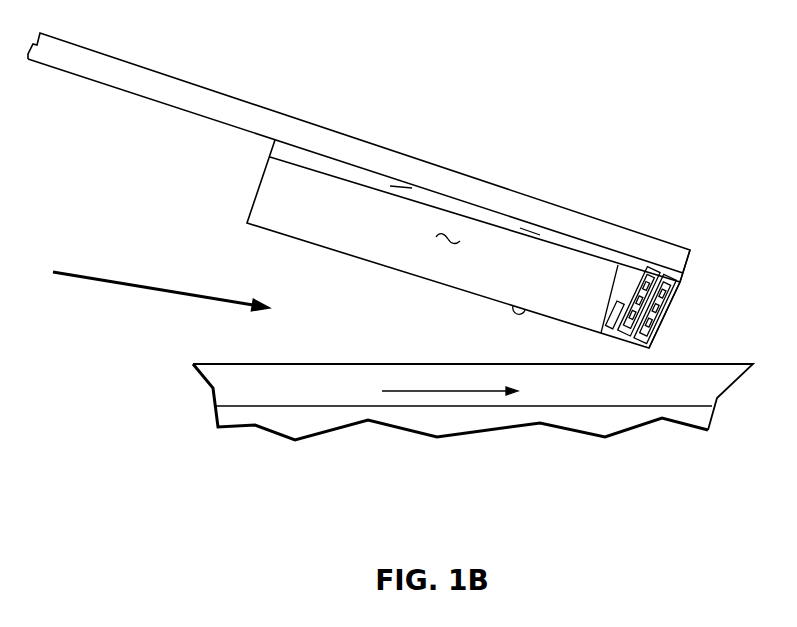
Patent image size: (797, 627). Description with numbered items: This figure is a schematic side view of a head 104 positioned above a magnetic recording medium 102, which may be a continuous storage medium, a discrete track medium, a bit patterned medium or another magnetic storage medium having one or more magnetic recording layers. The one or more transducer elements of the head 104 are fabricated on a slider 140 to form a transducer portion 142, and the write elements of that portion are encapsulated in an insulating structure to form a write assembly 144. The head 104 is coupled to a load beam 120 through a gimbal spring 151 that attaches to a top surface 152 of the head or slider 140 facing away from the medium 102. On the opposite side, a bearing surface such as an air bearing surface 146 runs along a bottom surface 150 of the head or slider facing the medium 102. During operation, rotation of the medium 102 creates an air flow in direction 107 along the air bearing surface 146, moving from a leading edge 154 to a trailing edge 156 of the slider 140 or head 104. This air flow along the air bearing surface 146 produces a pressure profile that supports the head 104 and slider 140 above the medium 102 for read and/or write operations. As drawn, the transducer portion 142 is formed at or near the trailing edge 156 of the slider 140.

The medium 102 is at (689, 393).
The head 104 is at (686, 236).
The direction of air flow 107 is at (445, 392).
The load beam 120 is at (295, 130).
The slider 140 is at (458, 240).
The transducer portion 142 is at (693, 284).
The write assembly 144 is at (657, 256).
The air bearing surface 146 is at (401, 287).
The bottom surface 150 is at (532, 307).
The gimbal spring 151 is at (402, 186).
The top surface 152 is at (530, 231).
The leading edge 154 is at (250, 203).
The trailing edge 156 is at (668, 312).